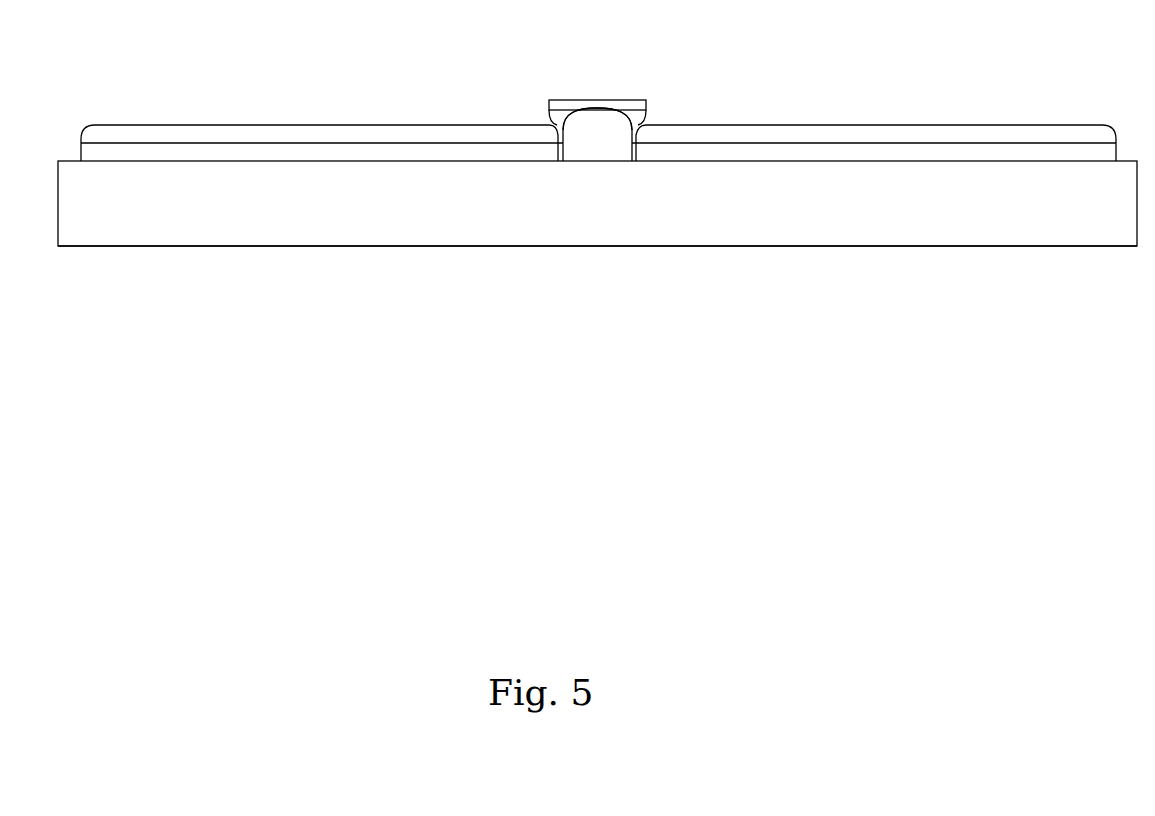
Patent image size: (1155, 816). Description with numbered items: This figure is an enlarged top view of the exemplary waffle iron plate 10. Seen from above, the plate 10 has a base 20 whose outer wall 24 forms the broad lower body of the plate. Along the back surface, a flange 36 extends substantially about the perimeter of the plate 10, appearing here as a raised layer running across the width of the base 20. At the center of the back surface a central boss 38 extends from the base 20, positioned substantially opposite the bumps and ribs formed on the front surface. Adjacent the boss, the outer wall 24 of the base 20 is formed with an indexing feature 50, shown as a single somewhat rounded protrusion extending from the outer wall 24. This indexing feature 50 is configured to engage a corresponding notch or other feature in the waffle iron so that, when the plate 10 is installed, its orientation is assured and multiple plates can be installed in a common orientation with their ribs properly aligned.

The waffle iron plate 10 is at (288, 342).
The base 20 is at (814, 272).
The outer wall 24 is at (727, 218).
The flange 36 is at (307, 126).
The central boss 38 is at (562, 100).
The indexing feature 50 is at (612, 137).